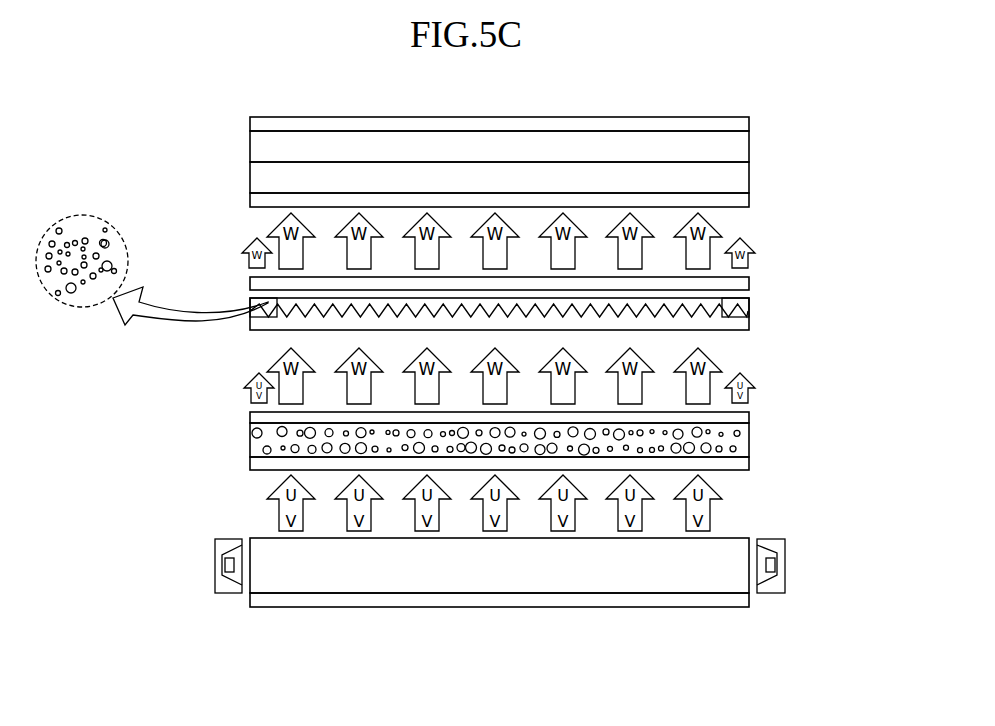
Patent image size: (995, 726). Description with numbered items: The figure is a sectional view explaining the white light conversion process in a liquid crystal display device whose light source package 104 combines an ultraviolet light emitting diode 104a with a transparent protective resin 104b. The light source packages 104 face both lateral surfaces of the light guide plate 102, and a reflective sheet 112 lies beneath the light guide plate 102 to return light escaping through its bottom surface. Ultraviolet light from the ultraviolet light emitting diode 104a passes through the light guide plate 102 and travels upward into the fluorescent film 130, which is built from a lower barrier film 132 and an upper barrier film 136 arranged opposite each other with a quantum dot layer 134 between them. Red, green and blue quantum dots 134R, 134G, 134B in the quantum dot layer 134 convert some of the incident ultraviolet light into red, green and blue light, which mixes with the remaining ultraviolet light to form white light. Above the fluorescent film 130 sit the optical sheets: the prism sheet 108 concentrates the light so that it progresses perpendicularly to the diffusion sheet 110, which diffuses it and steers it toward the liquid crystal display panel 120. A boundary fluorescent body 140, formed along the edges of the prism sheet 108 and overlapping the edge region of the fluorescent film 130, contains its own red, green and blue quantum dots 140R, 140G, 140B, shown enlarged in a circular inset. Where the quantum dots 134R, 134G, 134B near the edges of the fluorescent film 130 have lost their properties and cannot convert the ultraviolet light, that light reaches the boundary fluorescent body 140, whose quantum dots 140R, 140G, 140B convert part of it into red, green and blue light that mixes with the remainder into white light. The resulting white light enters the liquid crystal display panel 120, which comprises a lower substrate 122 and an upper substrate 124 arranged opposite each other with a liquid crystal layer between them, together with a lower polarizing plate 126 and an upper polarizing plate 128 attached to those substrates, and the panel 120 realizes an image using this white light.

The light guide plate 102 is at (493, 582).
The light source package 104 is at (530, 626).
The ultraviolet light emitting diode 104a is at (773, 573).
The transparent protective resin 104b is at (762, 582).
The prism sheet 108 is at (750, 324).
The diffusion sheet 110 is at (750, 282).
The reflective sheet 112 is at (572, 598).
The liquid crystal display panel 120 is at (572, 160).
The lower substrate 122 is at (750, 174).
The upper substrate 124 is at (750, 146).
The lower polarizing plate 126 is at (750, 197).
The upper polarizing plate 128 is at (750, 124).
The fluorescent film 130 is at (571, 441).
The lower barrier film 132 is at (750, 463).
The quantum dot layer 134 is at (750, 439).
The red quantum dot 134R is at (252, 433).
The green quantum dot 134G is at (263, 450).
The blue quantum dot 134B is at (282, 450).
The upper barrier film 136 is at (750, 415).
The boundary fluorescent body 140 is at (750, 306).
The green quantum dot 140G is at (106, 243).
The red quantum dot 140R is at (112, 267).
The blue quantum dot 140B is at (58, 296).